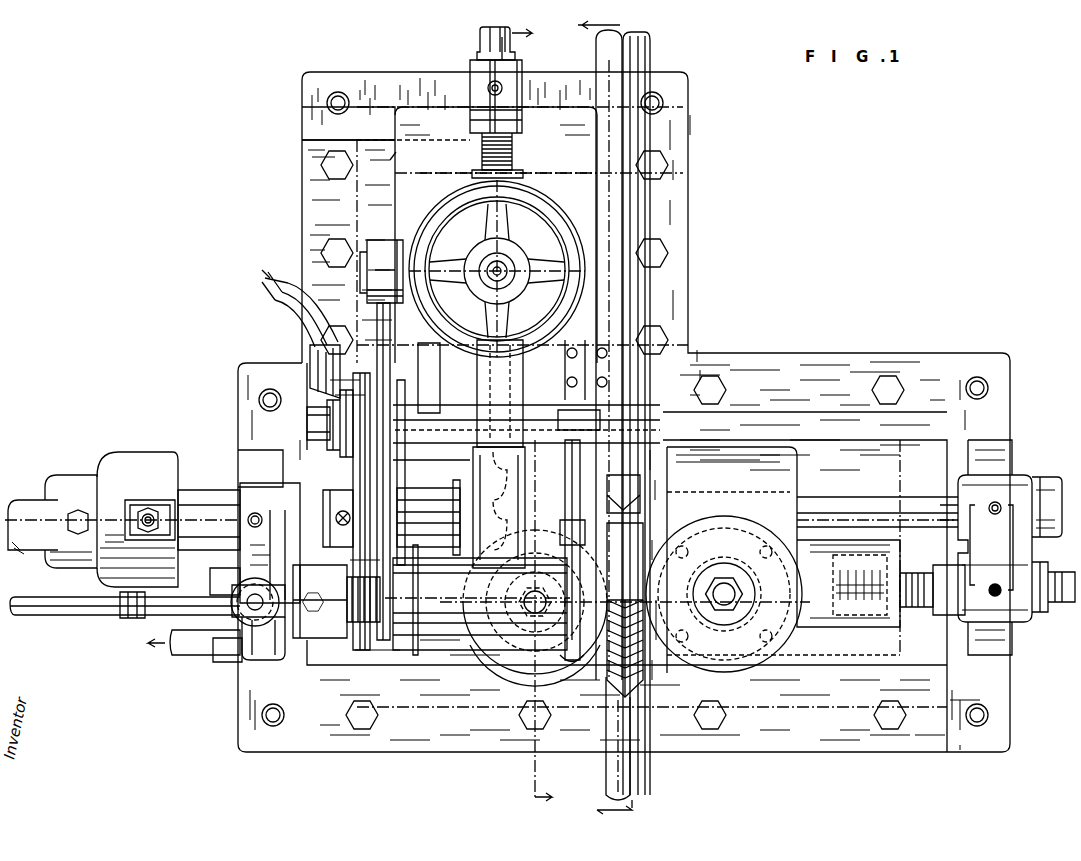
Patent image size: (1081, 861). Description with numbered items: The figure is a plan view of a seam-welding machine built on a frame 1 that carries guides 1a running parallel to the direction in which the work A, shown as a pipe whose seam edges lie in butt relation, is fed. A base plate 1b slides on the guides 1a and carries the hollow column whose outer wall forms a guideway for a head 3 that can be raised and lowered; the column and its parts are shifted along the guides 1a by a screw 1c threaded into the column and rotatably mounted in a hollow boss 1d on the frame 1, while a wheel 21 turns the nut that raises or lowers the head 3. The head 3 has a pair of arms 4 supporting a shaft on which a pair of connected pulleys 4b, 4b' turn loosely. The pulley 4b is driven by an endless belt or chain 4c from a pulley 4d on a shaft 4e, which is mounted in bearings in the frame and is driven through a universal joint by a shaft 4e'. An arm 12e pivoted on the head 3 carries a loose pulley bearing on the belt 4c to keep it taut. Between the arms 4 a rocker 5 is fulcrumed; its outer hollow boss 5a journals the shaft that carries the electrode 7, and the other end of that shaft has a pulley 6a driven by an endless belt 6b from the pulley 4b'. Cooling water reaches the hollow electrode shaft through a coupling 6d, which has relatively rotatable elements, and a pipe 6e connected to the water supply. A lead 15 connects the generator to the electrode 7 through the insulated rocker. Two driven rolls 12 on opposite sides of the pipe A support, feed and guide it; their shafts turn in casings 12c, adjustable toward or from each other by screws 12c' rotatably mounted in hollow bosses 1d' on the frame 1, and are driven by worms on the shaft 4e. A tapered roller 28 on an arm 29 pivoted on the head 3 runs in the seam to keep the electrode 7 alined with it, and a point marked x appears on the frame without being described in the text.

The frame 1 is at (683, 188).
The guides 1a is at (566, 188).
The base plate 1b is at (371, 148).
The screw 1c is at (512, 160).
The hollow boss 1d is at (476, 80).
The hollow bosses 1d' is at (1016, 550).
The head 3 is at (604, 418).
The arms 4 is at (432, 372).
The pulley 4b is at (338, 511).
The pulley 4b' is at (405, 471).
The endless belt or chain 4c is at (362, 473).
The pulley 4d is at (345, 540).
The shaft 4e is at (481, 499).
The shaft 4e' is at (93, 515).
The rocker 5 is at (520, 480).
The hollow boss 5a is at (443, 625).
The pulley 6a is at (396, 592).
The endless belt 6b is at (400, 512).
The coupling 6d is at (335, 628).
The pipe 6e is at (57, 616).
The electrode 7 is at (612, 668).
The driven rolls 12 is at (515, 665).
The casings 12c is at (783, 556).
The screw 12c' is at (932, 606).
The arm 12e is at (390, 318).
The lead 15 is at (289, 334).
The wheel 21 is at (447, 212).
The roller 28 is at (628, 492).
The arm 29 is at (568, 477).
The work A is at (655, 47).
The reference point x is at (390, 160).